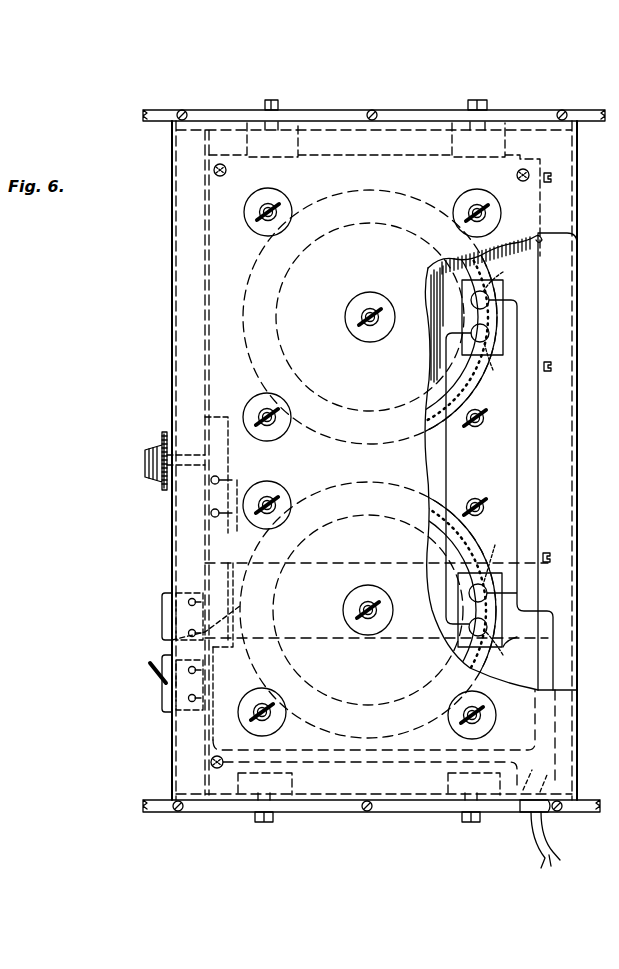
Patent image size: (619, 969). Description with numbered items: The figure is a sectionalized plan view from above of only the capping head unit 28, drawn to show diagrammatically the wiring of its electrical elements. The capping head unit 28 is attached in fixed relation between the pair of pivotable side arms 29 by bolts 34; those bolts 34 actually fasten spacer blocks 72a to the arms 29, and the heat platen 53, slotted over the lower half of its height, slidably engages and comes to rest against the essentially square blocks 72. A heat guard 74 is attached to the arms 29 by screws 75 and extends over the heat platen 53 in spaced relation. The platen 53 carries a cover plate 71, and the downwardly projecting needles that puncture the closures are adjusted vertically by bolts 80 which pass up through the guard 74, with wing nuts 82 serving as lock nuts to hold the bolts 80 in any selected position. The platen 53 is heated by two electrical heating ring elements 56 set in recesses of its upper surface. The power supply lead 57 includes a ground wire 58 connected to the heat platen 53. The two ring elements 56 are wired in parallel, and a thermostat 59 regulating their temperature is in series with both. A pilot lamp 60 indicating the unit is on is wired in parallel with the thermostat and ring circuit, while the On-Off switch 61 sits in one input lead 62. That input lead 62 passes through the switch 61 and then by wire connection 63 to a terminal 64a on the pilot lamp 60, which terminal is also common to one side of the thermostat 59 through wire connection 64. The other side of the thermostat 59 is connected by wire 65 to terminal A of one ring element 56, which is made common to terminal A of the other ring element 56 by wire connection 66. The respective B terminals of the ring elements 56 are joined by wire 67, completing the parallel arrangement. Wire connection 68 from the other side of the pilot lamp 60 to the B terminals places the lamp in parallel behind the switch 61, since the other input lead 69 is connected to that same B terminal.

The capping head unit 28 is at (162, 755).
The side arms 29 is at (322, 109).
The bolts 34 is at (272, 100).
The screws 75 is at (185, 112).
The heat guard 74 is at (185, 346).
The blocks 72 is at (222, 164).
The spacer blocks 72a is at (252, 160).
The electrical heating ring elements 56 is at (320, 432).
The bolts 80 is at (372, 334).
The wing nuts 82 is at (375, 305).
The wire connection 68 is at (323, 563).
The wire 65 is at (322, 638).
The input lead 62 is at (395, 753).
The heat platen 53 is at (520, 232).
The cover plate 71 is at (528, 342).
The wire connection 66 is at (447, 470).
The wire 67 is at (517, 468).
The input lead 69 is at (517, 613).
The thermostat 59 is at (146, 460).
The pilot lamp 60 is at (160, 622).
The On-Off switch 61 is at (152, 678).
The terminal 64a is at (170, 642).
The wire connection 64 is at (218, 640).
The wire connection 63 is at (214, 660).
The ground wire 58 is at (517, 797).
The power supply lead 57 is at (540, 860).